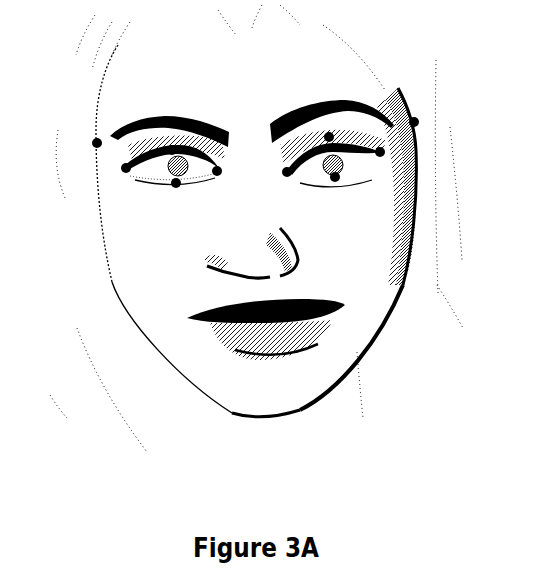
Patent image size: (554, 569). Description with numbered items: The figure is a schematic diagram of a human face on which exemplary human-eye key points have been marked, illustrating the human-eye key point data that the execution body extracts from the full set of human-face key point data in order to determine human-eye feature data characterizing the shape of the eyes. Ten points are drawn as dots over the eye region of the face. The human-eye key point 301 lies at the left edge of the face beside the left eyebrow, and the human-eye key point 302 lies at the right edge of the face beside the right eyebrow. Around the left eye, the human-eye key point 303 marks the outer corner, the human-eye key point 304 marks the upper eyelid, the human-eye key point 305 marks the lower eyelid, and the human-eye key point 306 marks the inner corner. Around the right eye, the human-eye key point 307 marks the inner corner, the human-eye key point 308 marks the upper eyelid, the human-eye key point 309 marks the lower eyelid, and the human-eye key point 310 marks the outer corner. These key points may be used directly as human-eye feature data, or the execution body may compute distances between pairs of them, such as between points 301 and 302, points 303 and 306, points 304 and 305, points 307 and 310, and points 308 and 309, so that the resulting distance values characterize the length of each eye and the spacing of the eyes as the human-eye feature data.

The human-eye key point 301 is at (89, 138).
The human-eye key point 302 is at (416, 116).
The human-eye key point 303 is at (122, 171).
The human-eye key point 304 is at (170, 147).
The human-eye key point 305 is at (175, 188).
The human-eye key point 306 is at (218, 176).
The human-eye key point 307 is at (287, 177).
The human-eye key point 308 is at (330, 132).
The human-eye key point 309 is at (337, 182).
The human-eye key point 310 is at (386, 152).